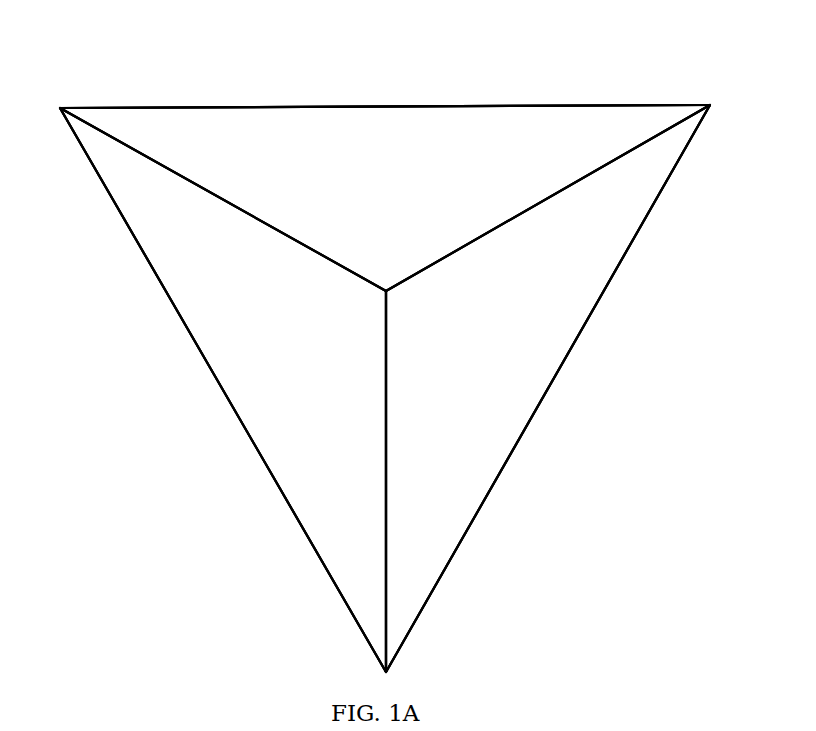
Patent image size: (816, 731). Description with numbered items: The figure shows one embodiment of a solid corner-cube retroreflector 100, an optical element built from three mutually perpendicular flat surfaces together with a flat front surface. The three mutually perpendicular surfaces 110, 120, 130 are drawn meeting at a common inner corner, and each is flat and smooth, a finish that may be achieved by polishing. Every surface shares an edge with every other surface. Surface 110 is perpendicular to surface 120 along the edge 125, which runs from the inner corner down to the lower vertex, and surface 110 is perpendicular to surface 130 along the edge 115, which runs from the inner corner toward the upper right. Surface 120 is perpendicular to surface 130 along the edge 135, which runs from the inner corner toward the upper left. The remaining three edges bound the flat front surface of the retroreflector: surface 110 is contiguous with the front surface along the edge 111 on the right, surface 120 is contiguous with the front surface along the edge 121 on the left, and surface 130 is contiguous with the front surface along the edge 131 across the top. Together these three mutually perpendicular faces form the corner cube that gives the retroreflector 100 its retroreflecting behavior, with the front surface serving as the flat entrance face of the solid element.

The solid corner-cube retroreflector 100 is at (505, 585).
The flat surface 110 is at (520, 349).
The edge 111 is at (520, 442).
The edge 115 is at (586, 175).
The flat surface 120 is at (300, 385).
The edge 121 is at (284, 498).
The edge 125 is at (386, 522).
The flat surface 130 is at (498, 141).
The edge 131 is at (448, 108).
The edge 135 is at (235, 208).